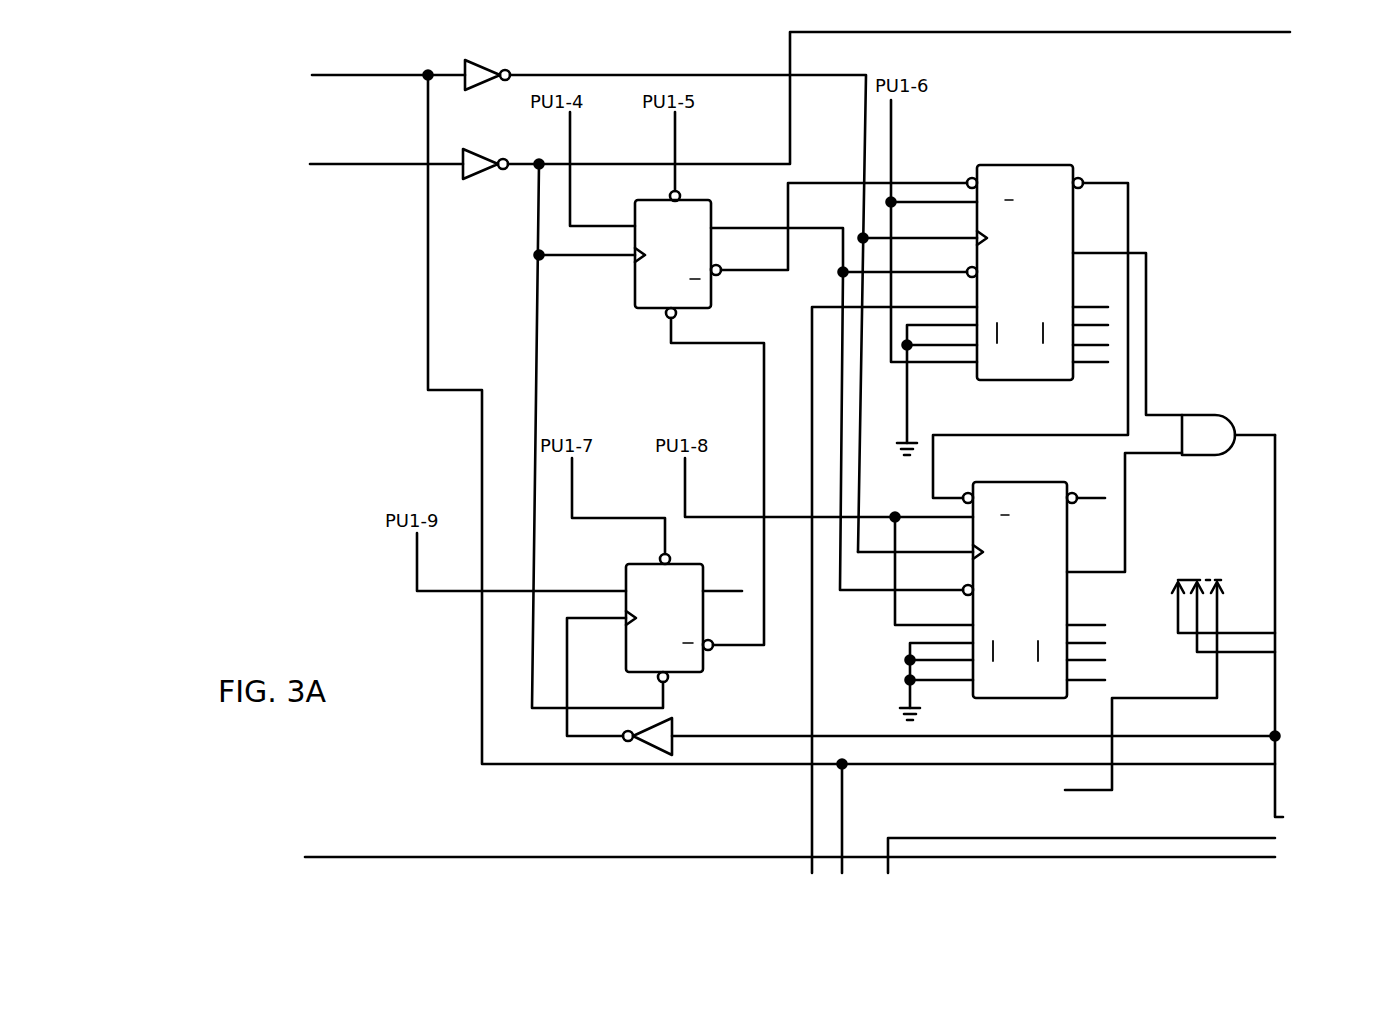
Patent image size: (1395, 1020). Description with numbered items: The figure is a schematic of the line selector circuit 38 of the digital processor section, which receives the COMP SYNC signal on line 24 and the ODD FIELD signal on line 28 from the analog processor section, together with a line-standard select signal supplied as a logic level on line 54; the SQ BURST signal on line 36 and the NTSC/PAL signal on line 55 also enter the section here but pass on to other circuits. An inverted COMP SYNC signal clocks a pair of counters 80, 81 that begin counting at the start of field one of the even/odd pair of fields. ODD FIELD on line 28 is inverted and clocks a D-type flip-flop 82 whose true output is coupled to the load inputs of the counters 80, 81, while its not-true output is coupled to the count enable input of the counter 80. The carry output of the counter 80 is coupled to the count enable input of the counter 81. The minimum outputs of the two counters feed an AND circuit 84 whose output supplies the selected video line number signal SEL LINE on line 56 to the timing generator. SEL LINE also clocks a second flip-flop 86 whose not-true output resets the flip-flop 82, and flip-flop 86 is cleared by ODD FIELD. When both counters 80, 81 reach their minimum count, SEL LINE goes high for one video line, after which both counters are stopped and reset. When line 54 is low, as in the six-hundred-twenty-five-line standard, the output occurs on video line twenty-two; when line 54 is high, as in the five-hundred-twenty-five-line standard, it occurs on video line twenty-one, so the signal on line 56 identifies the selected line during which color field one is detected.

The line 24 is at (332, 75).
The line 28 is at (322, 168).
The line 36 is at (310, 857).
The line selector circuit 38 is at (1195, 288).
The line 54 is at (810, 838).
The line 55 is at (1133, 838).
The line 56 is at (1277, 693).
The counter 80 is at (1065, 165).
The counter 81 is at (1058, 527).
The D-type flip-flop 82 is at (635, 287).
The AND circuit 84 is at (1225, 427).
The second flip-flop 86 is at (690, 658).